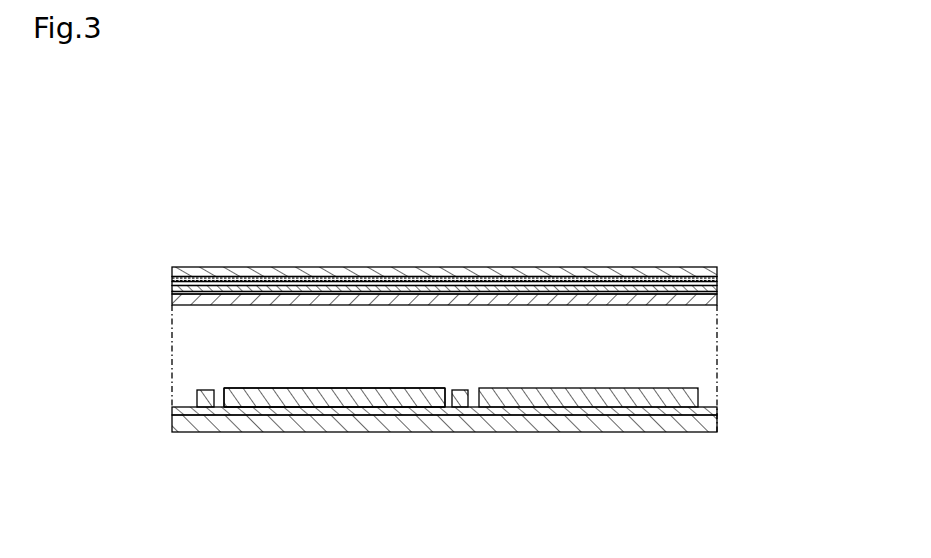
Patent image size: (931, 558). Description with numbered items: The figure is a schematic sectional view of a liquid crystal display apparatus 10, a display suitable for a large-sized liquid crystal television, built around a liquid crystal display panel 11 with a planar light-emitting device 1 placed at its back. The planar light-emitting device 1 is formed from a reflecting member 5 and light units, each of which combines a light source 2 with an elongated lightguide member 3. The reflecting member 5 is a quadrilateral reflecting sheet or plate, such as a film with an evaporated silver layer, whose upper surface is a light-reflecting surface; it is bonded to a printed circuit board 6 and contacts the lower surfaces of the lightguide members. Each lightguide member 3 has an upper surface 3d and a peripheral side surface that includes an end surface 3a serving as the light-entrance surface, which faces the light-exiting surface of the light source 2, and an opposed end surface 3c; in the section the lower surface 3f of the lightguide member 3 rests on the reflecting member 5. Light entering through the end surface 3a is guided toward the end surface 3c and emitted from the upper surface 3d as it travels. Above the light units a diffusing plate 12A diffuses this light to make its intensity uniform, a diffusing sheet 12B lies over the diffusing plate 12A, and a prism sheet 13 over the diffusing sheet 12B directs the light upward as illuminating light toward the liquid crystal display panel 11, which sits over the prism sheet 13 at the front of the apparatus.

The liquid crystal display apparatus 10 is at (452, 233).
The liquid crystal display panel 11 is at (225, 268).
The prism sheet 13 is at (293, 278).
The diffusing sheet 12B is at (348, 284).
The diffusing plate 12A is at (410, 290).
The planar light-emitting device 1 is at (478, 405).
The reflecting member 5 is at (712, 406).
The printed circuit board 6 is at (634, 433).
The light source 2 is at (200, 389).
The lightguide member 3 is at (327, 388).
The upper surface 3d is at (278, 388).
The end surface 3c is at (447, 390).
The end surface 3a is at (219, 396).
The lower surface of element 3 3f is at (295, 408).